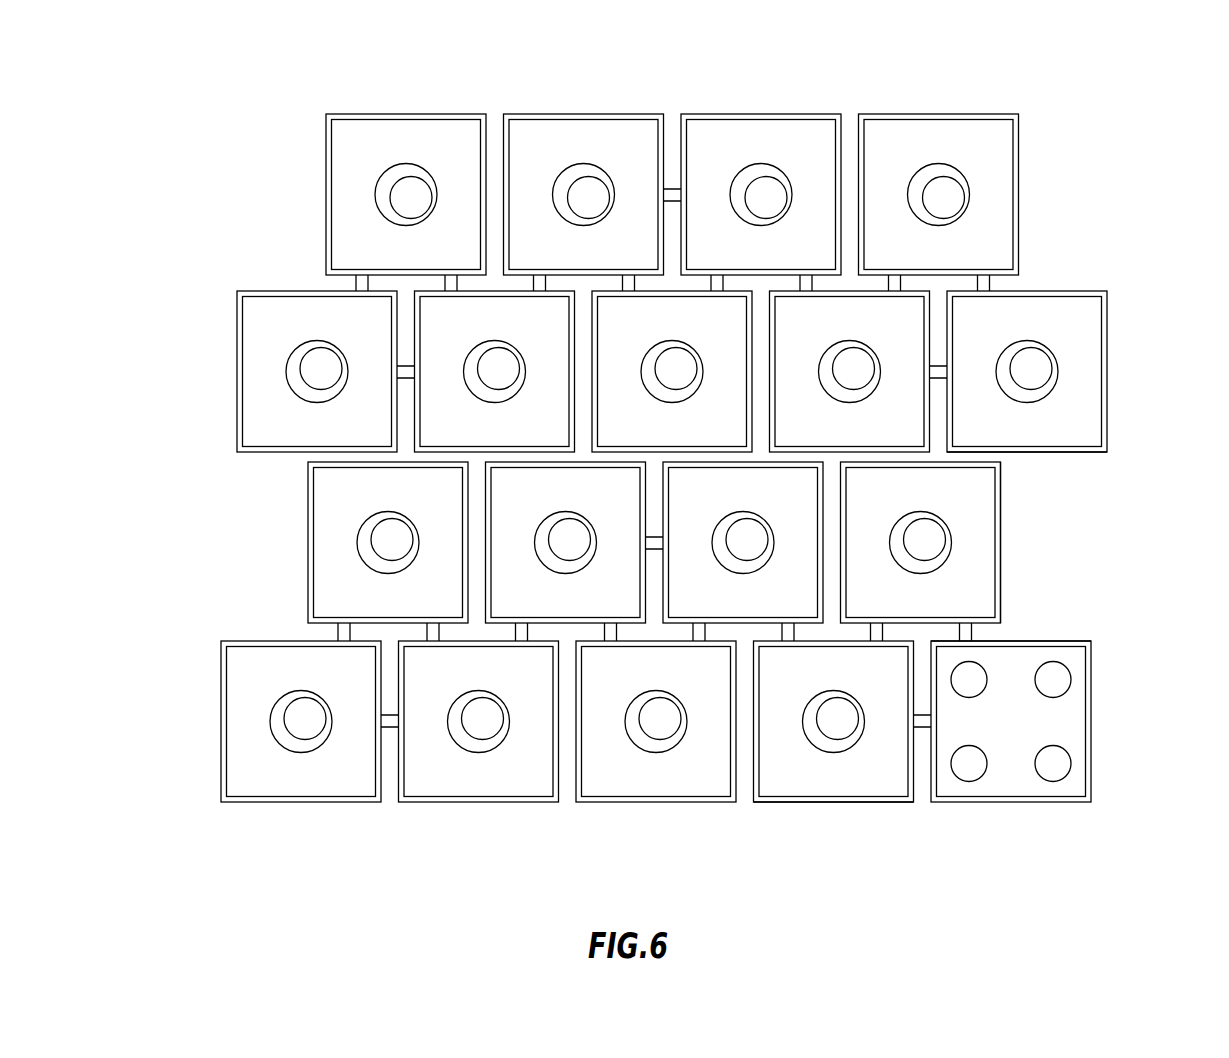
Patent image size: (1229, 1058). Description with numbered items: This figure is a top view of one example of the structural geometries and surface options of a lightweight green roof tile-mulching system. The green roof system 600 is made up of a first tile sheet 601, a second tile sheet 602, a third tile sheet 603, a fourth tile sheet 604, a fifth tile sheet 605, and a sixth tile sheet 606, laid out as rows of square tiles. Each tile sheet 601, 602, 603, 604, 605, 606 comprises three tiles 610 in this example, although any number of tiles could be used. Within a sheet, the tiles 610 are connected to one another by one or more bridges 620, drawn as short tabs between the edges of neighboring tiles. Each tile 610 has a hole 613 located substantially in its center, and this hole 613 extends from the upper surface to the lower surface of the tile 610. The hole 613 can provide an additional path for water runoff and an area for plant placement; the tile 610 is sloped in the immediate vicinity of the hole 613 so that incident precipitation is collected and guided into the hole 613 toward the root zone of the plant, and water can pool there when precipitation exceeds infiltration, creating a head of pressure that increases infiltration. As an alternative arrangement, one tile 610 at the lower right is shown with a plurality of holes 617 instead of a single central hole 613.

The green roof system 600 is at (668, 469).
The first tile sheet 601 is at (227, 180).
The second tile sheet 602 is at (680, 95).
The third tile sheet 603 is at (1073, 187).
The fourth tile sheet 604 is at (1063, 580).
The fifth tile sheet 605 is at (561, 820).
The sixth tile sheet 606 is at (229, 820).
The tile 610 is at (1025, 640).
The hole 613 is at (573, 183).
The holes 617 is at (1070, 679).
The bridge 620 is at (353, 287).